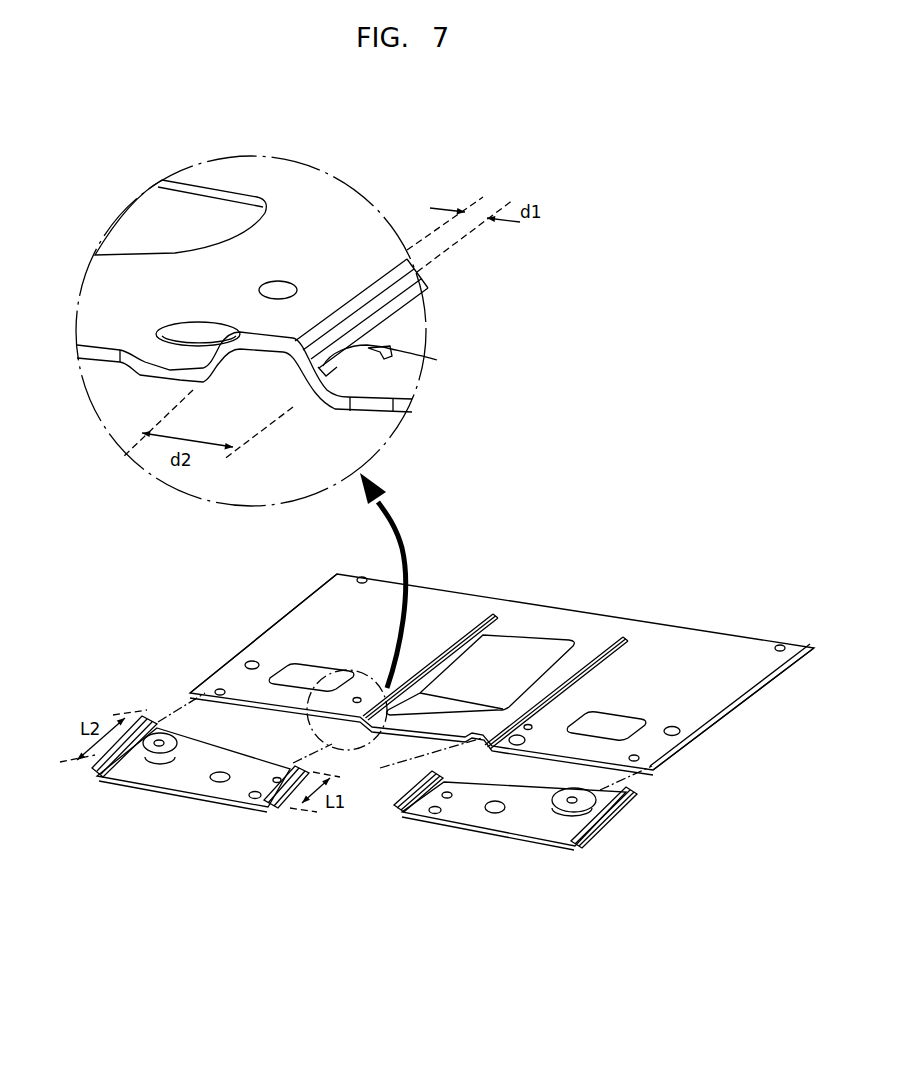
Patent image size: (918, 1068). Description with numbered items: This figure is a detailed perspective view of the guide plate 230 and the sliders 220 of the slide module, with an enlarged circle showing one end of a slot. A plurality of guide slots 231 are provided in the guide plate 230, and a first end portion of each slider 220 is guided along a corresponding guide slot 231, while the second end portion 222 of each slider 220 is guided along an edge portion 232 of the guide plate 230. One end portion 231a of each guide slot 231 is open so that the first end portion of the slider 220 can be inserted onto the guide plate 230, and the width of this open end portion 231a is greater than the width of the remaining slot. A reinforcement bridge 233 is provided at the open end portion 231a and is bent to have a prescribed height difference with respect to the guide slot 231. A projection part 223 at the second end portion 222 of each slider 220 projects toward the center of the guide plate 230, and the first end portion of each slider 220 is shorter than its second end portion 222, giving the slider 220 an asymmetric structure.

The slider 220 is at (184, 806).
The second end portion 222 is at (92, 768).
The projection part 223 is at (167, 740).
The guide plate 230 is at (737, 608).
The guide slot 231 is at (366, 295).
The open end portion 231a is at (425, 356).
The edge portion 232 is at (263, 637).
The reinforcement bridge 233 is at (252, 340).